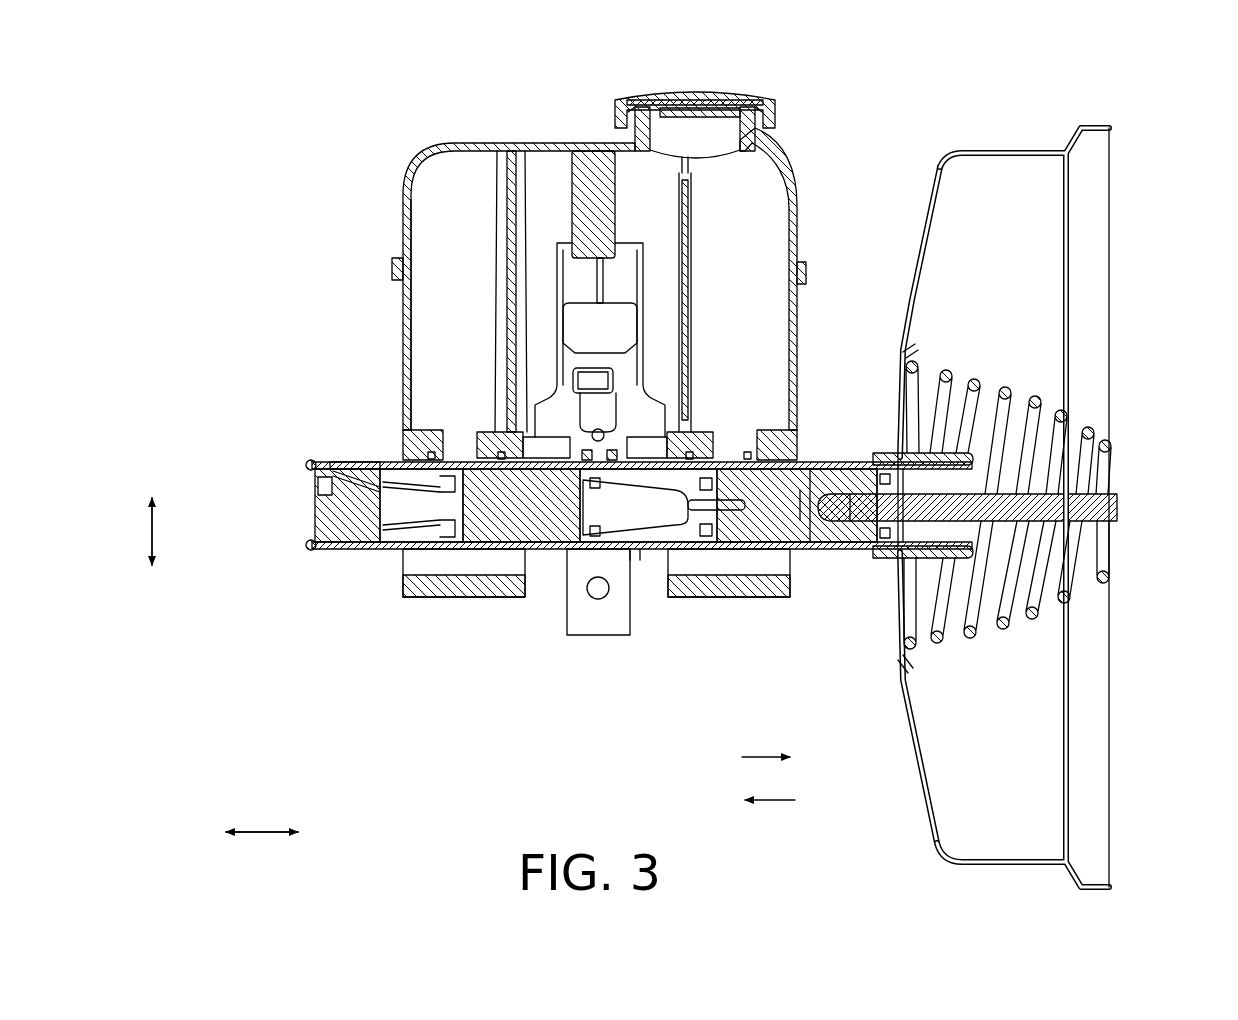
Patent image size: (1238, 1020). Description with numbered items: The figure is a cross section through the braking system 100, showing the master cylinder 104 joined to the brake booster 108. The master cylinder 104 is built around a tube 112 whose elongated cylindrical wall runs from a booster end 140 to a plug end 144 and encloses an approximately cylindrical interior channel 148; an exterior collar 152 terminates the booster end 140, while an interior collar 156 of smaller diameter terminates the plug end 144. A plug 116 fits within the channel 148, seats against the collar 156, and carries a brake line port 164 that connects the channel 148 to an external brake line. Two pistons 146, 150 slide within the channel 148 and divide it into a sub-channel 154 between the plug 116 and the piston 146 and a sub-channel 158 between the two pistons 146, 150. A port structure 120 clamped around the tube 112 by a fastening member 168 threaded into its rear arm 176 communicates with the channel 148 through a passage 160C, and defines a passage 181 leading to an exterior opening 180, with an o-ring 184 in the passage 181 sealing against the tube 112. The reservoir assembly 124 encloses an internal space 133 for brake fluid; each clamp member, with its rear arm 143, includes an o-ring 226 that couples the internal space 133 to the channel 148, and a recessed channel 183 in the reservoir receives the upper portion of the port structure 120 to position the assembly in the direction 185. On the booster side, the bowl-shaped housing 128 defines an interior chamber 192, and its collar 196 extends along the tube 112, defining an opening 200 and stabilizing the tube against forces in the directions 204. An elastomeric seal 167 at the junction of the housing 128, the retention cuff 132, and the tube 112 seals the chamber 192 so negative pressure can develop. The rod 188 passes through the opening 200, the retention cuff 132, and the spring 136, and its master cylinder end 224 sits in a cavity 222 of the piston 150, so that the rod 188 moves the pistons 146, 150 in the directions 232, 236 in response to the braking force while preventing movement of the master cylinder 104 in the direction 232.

The braking system 100 is at (445, 716).
The master cylinder 104 is at (562, 274).
The brake booster 108 is at (1007, 487).
The tube 112 is at (378, 460).
The plug 116 is at (308, 545).
The port structure 120 is at (577, 630).
The reservoir assembly 124 is at (403, 200).
The housing 128 is at (922, 235).
The retention cuff 132 is at (910, 348).
The internal space 133 is at (446, 226).
The spring 136 is at (1007, 497).
The booster end 140 is at (915, 660).
The rear arm 143 is at (440, 596).
The plug end 144 is at (337, 455).
The piston 146 is at (547, 556).
The interior channel 148 is at (947, 478).
The piston 150 is at (810, 520).
The collar 152 is at (965, 555).
The sub-channel 154 is at (325, 541).
The collar 156 is at (308, 465).
The sub-channel 158 is at (662, 535).
The passage 160C is at (590, 482).
The brake line port 164 is at (322, 484).
The elastomeric seal 167 is at (897, 440).
The fastening member 168 is at (590, 598).
The rear arm 176 is at (633, 610).
The opening 180 is at (607, 436).
The passage 181 is at (560, 395).
The recessed channel 183 is at (643, 400).
The o-ring 184 is at (572, 455).
The direction 185 is at (262, 820).
The rod 188 is at (1108, 500).
The interior chamber 192 is at (985, 255).
The collar 196 is at (895, 455).
The passage/opening 200 is at (893, 556).
The directions 204 is at (150, 508).
The cavity 222 is at (808, 520).
The master cylinder end 224 is at (850, 510).
The o-ring 226 is at (428, 450).
The direction 232 is at (768, 742).
The direction 236 is at (775, 803).